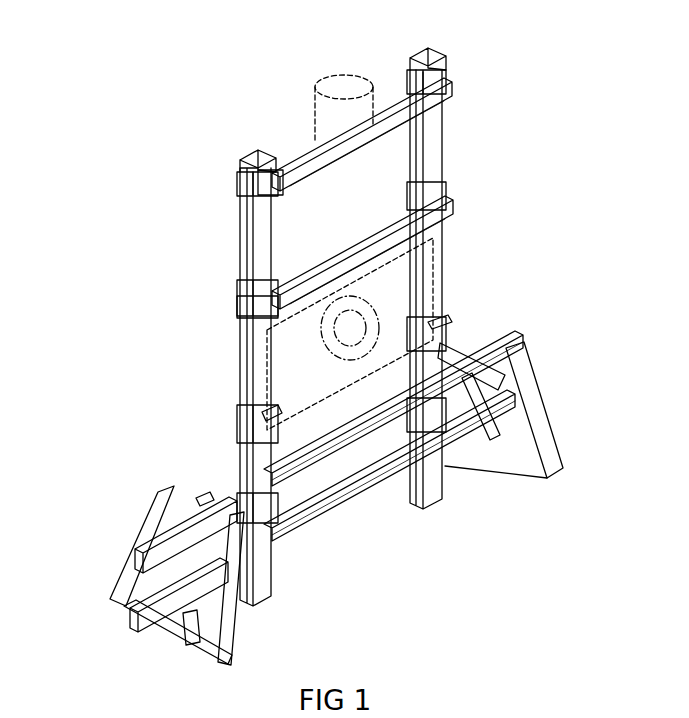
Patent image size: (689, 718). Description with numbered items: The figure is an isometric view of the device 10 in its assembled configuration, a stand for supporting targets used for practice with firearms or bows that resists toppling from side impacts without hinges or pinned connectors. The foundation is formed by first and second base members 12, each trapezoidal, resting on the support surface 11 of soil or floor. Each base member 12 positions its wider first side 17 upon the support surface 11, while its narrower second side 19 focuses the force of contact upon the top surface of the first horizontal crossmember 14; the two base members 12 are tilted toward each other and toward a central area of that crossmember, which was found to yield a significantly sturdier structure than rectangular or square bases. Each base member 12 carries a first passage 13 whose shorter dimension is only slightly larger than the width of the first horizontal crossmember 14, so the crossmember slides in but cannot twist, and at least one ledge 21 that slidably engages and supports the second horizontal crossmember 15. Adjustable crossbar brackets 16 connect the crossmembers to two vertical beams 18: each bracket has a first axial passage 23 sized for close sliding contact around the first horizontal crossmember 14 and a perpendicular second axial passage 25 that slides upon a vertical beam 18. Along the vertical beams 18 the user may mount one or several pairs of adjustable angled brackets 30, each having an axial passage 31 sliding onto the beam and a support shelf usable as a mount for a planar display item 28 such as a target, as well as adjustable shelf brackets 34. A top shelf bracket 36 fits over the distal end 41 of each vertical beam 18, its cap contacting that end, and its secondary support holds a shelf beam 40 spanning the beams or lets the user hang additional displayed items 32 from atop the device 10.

The device 10 is at (158, 203).
The support surface 11 is at (328, 565).
The base member 12 is at (156, 582).
The first passage 13 is at (236, 503).
The first horizontal crossmember 14 is at (140, 560).
The second horizontal crossmember 15 is at (135, 625).
The adjustable crossbar bracket 16 is at (245, 497).
The first side 17 is at (122, 600).
The vertical beam 18 is at (251, 410).
The second side 19 is at (457, 342).
The ledge 21 is at (205, 643).
The first axial passage 23 is at (428, 470).
The second axial passage 25 is at (388, 410).
The planar display item 28 is at (395, 296).
The adjustable angled bracket 30 is at (263, 432).
The axial passage 31 is at (262, 410).
The displayed item 32 is at (320, 128).
The adjustable shelf bracket 34 is at (243, 307).
The top shelf bracket 36 is at (247, 162).
The shelf beam 40 is at (392, 97).
The distal end 41 is at (246, 204).